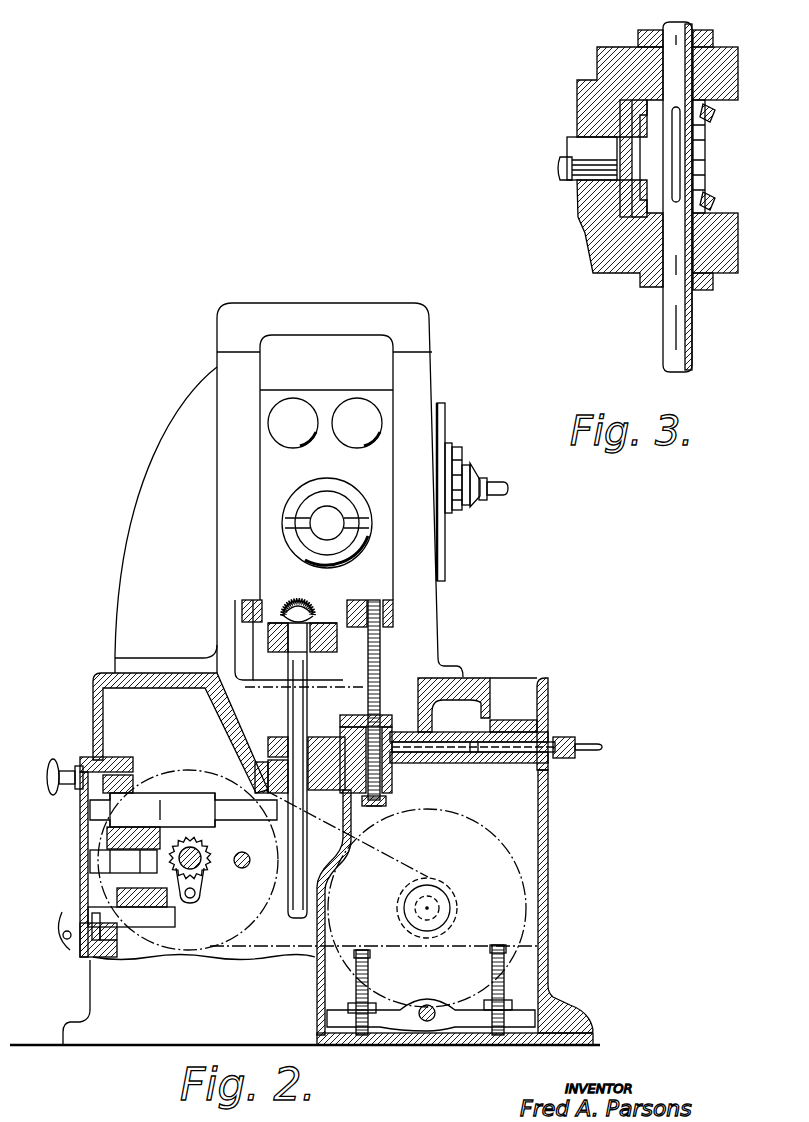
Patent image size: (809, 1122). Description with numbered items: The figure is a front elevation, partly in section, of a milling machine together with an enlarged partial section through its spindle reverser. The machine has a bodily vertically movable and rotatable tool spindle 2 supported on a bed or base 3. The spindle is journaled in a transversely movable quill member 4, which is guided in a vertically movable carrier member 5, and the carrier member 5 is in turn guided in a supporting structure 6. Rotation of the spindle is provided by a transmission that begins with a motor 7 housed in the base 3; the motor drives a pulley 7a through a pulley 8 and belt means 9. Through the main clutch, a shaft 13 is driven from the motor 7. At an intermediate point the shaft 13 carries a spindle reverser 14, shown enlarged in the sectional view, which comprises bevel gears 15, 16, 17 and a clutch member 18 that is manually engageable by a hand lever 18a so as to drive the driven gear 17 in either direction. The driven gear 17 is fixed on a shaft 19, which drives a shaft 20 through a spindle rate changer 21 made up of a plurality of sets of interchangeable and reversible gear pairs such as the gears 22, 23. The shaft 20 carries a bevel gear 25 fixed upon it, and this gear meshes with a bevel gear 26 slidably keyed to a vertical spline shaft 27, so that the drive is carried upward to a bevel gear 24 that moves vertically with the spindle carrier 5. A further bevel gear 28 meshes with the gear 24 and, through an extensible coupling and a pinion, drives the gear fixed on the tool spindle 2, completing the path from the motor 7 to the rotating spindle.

In FIG. 2, the tool spindle 2 is at (310, 500).
In FIG. 2, the bed or base 3 is at (545, 700).
In FIG. 2, the quill member 4 is at (290, 518).
In FIG. 2, the carrier member 5 is at (290, 463).
In FIG. 2, the supporting structure 6 is at (311, 490).
In FIG. 2, the motor 7 is at (475, 847).
In FIG. 2, the pulley 7a is at (245, 934).
In FIG. 2, the pulley 8 is at (450, 910).
In FIG. 2, the belt means 9 is at (428, 878).
In FIG. 2, the shaft 13 is at (192, 880).
In FIG. 3, the shaft 13 is at (662, 318).
In FIG. 2, the spindle reverser 14 is at (212, 887).
In FIG. 3, the spindle reverser 14 is at (570, 228).
In FIG. 3, the bevel gear 15 is at (714, 198).
In FIG. 3, the bevel gear 16 is at (714, 112).
In FIG. 3, the bevel gear 17 is at (590, 258).
In FIG. 3, the clutch member 18 is at (708, 172).
In FIG. 2, the hand lever 18a is at (80, 933).
In FIG. 2, the shaft 19 is at (110, 874).
In FIG. 3, the shaft 19 is at (577, 168).
In FIG. 2, the shaft 20 is at (178, 800).
In FIG. 2, the spindle rate changer 21 is at (90, 840).
In FIG. 2, the gear 22 is at (90, 864).
In FIG. 2, the gear 23 is at (100, 795).
In FIG. 2, the bevel gear 24 is at (245, 630).
In FIG. 2, the bevel gear 25 is at (265, 780).
In FIG. 2, the bevel gear 26 is at (262, 760).
In FIG. 2, the vertical spline shaft 27 is at (308, 695).
In FIG. 2, the bevel gear 28 is at (320, 604).